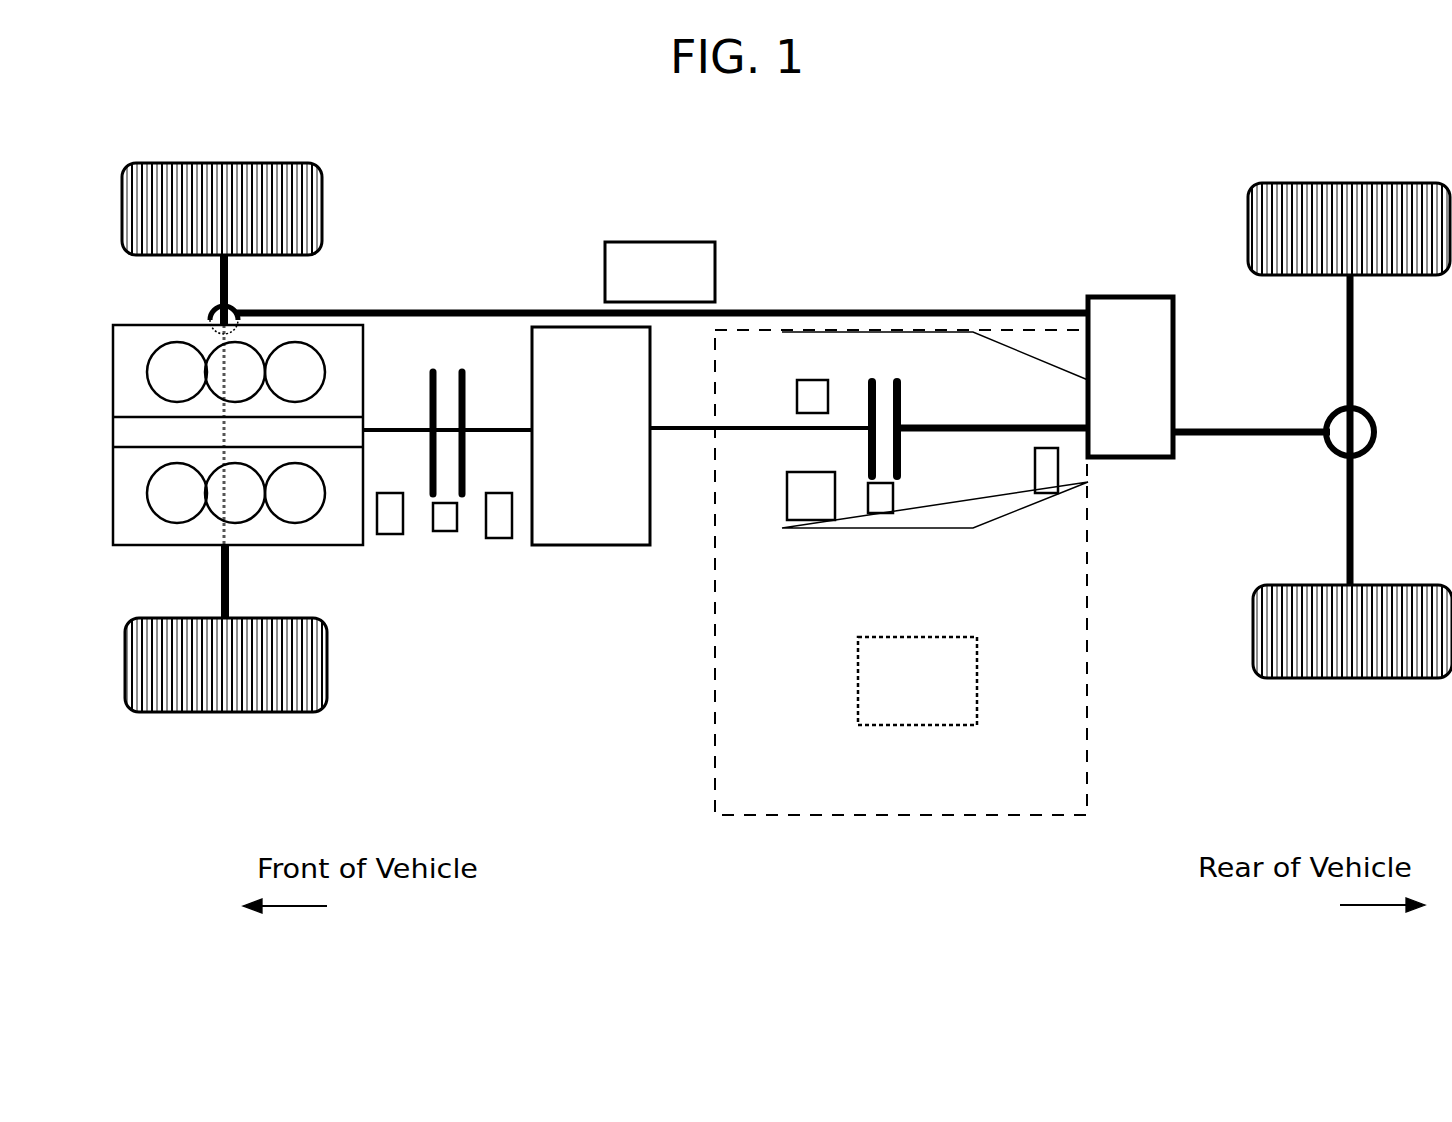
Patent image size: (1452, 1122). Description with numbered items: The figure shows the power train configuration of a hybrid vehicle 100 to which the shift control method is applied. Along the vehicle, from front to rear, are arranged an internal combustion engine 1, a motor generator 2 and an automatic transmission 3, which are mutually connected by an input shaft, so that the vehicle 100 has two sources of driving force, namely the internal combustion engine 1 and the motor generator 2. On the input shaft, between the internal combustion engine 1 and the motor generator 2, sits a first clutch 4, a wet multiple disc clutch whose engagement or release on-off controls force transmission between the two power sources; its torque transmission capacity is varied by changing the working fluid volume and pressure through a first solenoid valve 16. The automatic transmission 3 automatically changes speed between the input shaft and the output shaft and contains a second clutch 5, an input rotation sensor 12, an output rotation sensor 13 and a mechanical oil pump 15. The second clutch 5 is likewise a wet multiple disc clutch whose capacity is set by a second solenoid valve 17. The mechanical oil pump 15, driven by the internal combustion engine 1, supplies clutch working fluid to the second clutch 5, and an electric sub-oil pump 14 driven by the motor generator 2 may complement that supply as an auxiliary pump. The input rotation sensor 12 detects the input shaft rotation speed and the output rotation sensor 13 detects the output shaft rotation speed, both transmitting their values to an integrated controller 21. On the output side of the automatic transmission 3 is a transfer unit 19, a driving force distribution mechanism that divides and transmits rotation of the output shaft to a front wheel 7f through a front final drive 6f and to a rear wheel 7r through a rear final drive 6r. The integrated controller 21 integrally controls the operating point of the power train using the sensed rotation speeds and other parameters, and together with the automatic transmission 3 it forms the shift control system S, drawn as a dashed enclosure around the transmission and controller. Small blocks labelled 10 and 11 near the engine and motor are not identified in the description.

The vehicle 100 is at (1222, 172).
The internal combustion engine 1 is at (330, 548).
The motor generator 2 is at (590, 546).
The automatic transmission 3 is at (863, 332).
The first clutch 4 is at (430, 372).
The second clutch 5 is at (868, 385).
The rear final drive 6r is at (210, 318).
The front final drive 6f is at (1362, 408).
The front wheel 7f is at (203, 163).
The rear wheel 7r is at (1370, 183).
The engine rotation speed sensor 10 is at (390, 536).
The motor rotation speed sensor 11 is at (498, 540).
The input rotation sensor 12 is at (797, 396).
The output rotation sensor 13 is at (1045, 494).
The electric sub-oil pump 14 is at (672, 242).
The mechanical oil pump 15 is at (803, 522).
The first solenoid valve 16 is at (443, 532).
The second solenoid valve 17 is at (888, 514).
The transfer unit 19 is at (1107, 297).
The integrated controller 21 is at (900, 728).
The shift control system S is at (857, 818).